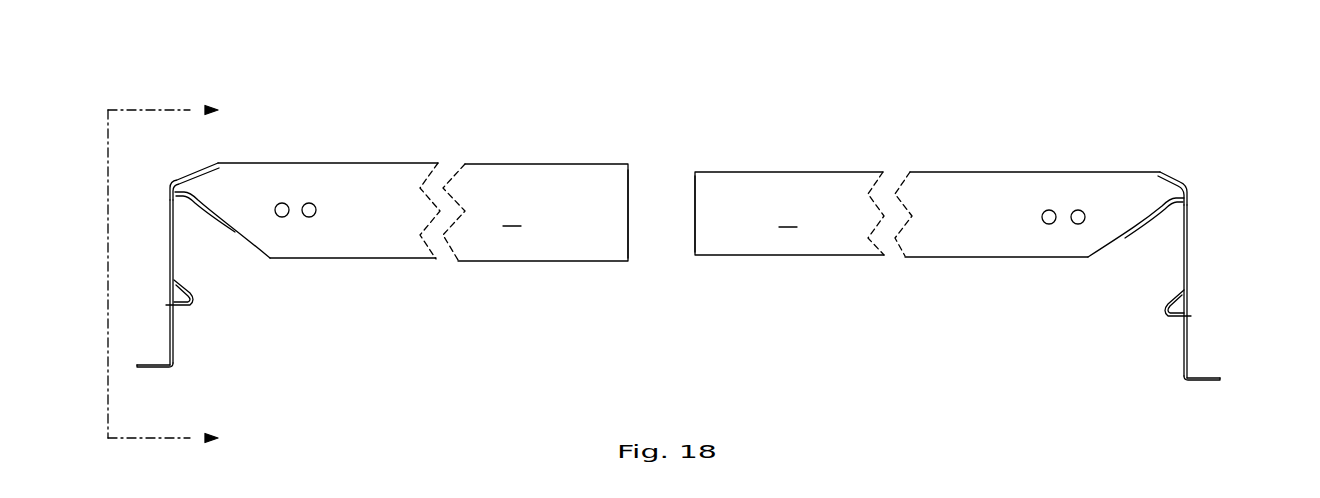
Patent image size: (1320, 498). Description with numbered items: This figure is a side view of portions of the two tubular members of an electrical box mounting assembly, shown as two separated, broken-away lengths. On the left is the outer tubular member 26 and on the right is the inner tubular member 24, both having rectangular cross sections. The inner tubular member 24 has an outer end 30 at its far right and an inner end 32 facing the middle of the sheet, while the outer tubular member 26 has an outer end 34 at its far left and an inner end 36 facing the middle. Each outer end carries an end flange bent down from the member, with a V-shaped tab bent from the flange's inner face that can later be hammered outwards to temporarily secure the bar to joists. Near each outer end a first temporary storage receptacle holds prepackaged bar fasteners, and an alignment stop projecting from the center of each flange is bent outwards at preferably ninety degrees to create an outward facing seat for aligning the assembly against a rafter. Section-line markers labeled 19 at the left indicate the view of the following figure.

The section line of FIG. 19 is at (163, 264).
The inner tubular member 24 is at (997, 127).
The outer tubular member 26 is at (388, 122).
The outer end 30 is at (1188, 188).
The inner end 32 is at (695, 217).
The outer end 34 is at (168, 183).
The inner end 36 is at (628, 213).